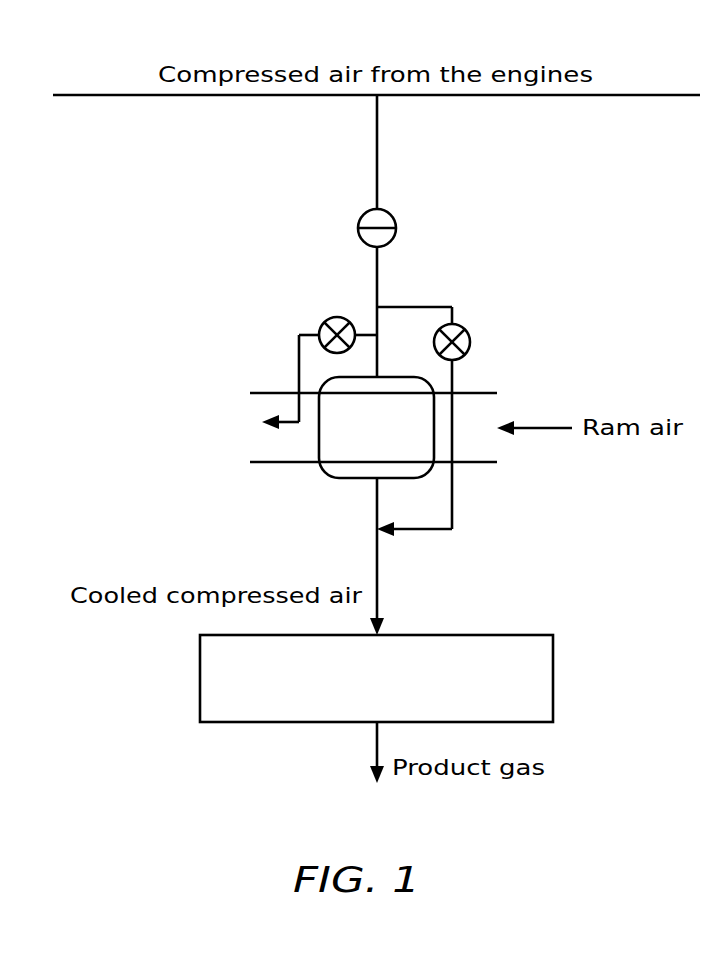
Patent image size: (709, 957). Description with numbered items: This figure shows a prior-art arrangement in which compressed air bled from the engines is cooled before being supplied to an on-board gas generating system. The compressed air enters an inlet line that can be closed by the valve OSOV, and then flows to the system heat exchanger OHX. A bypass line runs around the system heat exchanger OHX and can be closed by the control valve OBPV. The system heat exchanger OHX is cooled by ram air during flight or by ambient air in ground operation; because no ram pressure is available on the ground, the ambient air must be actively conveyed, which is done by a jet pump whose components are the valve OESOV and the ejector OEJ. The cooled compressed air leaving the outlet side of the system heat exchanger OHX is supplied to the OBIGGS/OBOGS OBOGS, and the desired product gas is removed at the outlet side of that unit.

The valve OSOV is at (339, 213).
The jet pump component OESOV is at (298, 323).
The control valve OBPV is at (459, 421).
The jet pump component OEJ is at (249, 382).
The system heat exchanger OHX is at (373, 427).
The OBIGGS/ OBOGS is at (376, 678).